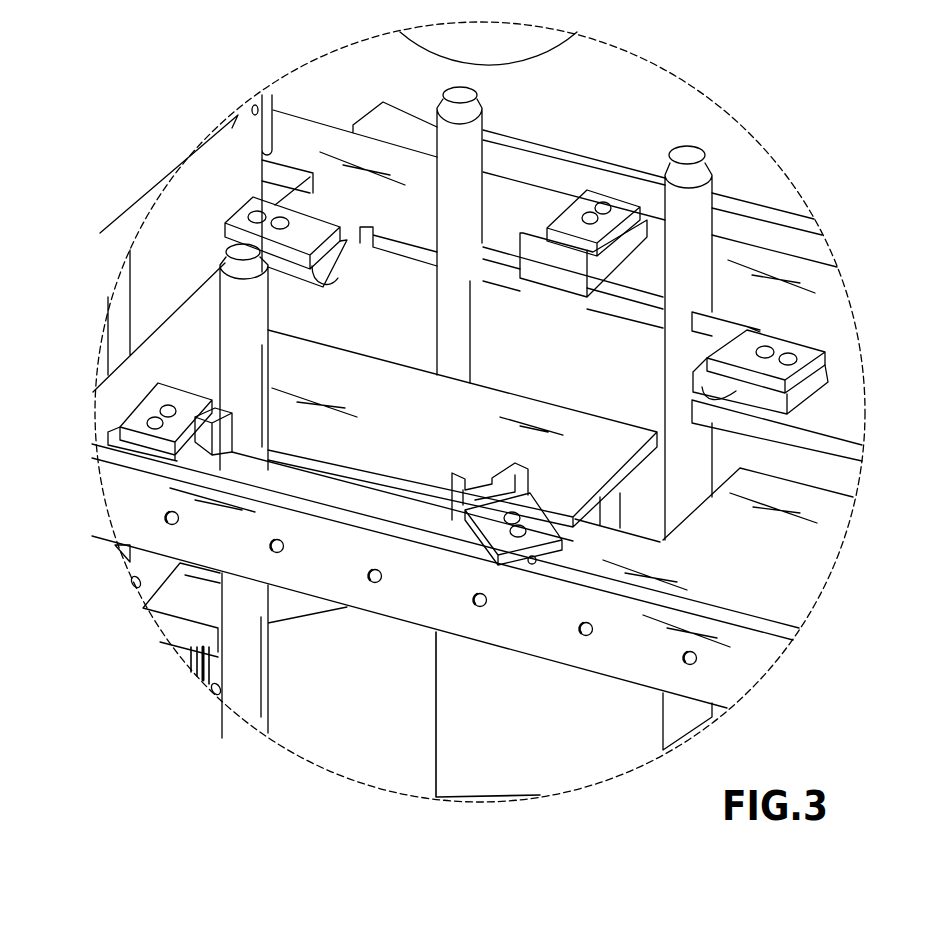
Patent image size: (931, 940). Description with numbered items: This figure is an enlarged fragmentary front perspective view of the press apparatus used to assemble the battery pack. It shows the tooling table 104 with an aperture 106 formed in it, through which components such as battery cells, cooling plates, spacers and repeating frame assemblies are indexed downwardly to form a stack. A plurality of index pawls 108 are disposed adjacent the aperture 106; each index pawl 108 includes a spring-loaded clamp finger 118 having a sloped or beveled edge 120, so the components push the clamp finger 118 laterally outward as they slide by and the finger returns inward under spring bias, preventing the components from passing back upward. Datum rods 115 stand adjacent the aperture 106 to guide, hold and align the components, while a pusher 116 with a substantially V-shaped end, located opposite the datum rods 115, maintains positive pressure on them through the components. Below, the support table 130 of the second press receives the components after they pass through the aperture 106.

The tooling table 104 is at (757, 606).
The aperture 106 is at (493, 357).
The index pawls 108 is at (152, 387).
The datum rods 115 is at (452, 172).
The pusher 116 is at (453, 484).
The clamp finger 118 is at (332, 273).
The beveled edge 120 is at (338, 246).
The support table 130 is at (390, 407).